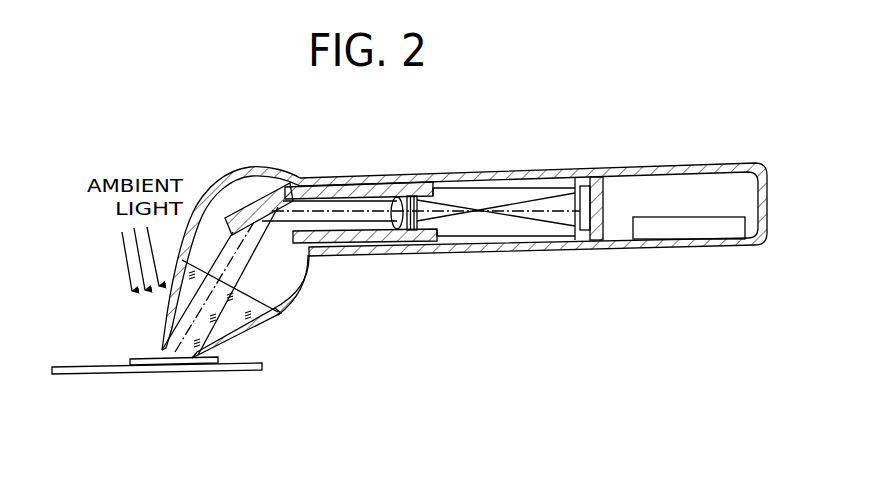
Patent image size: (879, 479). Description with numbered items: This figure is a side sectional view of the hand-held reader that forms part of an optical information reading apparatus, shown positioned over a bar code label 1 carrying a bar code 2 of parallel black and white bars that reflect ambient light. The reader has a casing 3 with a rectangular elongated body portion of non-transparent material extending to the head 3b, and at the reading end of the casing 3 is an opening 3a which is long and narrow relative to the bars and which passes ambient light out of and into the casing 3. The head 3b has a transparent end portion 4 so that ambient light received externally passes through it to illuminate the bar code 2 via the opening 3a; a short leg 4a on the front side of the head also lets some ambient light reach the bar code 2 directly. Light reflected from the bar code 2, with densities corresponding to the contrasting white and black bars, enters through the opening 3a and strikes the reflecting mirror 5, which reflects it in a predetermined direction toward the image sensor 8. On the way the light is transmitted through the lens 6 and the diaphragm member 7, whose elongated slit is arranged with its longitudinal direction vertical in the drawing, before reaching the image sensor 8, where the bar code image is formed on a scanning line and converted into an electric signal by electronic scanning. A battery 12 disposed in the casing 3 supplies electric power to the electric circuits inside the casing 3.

The bar code label 1 is at (85, 376).
The bar code 2 is at (133, 360).
The casing 3 is at (457, 167).
The opening 3a is at (180, 374).
The head 3b is at (263, 168).
The transparent end portion 4 is at (247, 335).
The short leg 4a is at (163, 349).
The reflecting mirror 5 is at (238, 222).
The lens 6 is at (397, 204).
The diaphragm member 7 is at (418, 259).
The image sensor 8 is at (581, 194).
The battery 12 is at (657, 236).